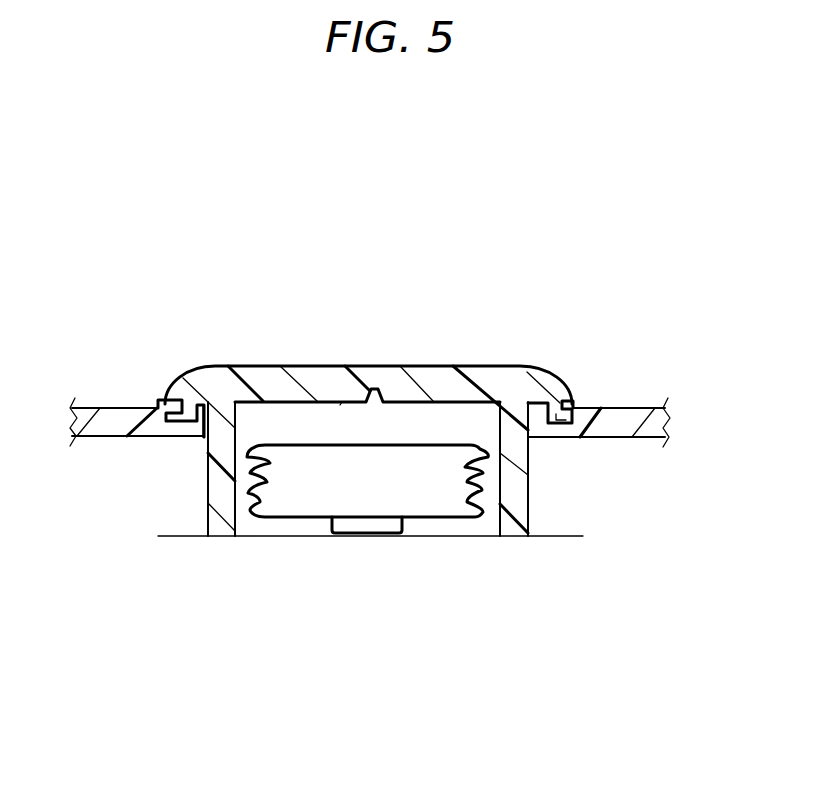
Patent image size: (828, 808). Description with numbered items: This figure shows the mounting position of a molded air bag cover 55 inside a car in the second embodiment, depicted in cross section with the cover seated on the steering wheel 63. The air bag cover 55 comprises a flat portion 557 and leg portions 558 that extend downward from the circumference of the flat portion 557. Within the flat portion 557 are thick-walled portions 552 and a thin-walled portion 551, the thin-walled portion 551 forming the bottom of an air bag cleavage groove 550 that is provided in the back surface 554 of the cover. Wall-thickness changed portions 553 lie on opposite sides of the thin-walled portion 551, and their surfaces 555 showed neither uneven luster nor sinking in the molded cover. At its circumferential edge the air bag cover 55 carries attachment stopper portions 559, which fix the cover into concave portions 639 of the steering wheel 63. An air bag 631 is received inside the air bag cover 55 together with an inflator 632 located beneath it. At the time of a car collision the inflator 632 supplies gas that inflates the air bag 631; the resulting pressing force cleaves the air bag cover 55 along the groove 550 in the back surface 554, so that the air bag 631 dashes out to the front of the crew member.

The air bag cover 55 is at (517, 366).
The air bag cleavage groove 550 is at (370, 387).
The thin-walled portion 551 is at (390, 367).
The thick-walled portions 552 is at (442, 382).
The wall-thickness changed portions 553 is at (390, 392).
The back surface 554 is at (340, 405).
The surfaces of the wall-thickness changed portions 555 is at (297, 367).
The flat portion 557 is at (263, 381).
The leg portions 558 is at (217, 490).
The attachment stopper portions 559 is at (575, 410).
The steering wheel 63 is at (117, 420).
The air bag 631 is at (447, 488).
The inflator 632 is at (387, 523).
The concave portions 639 is at (560, 427).